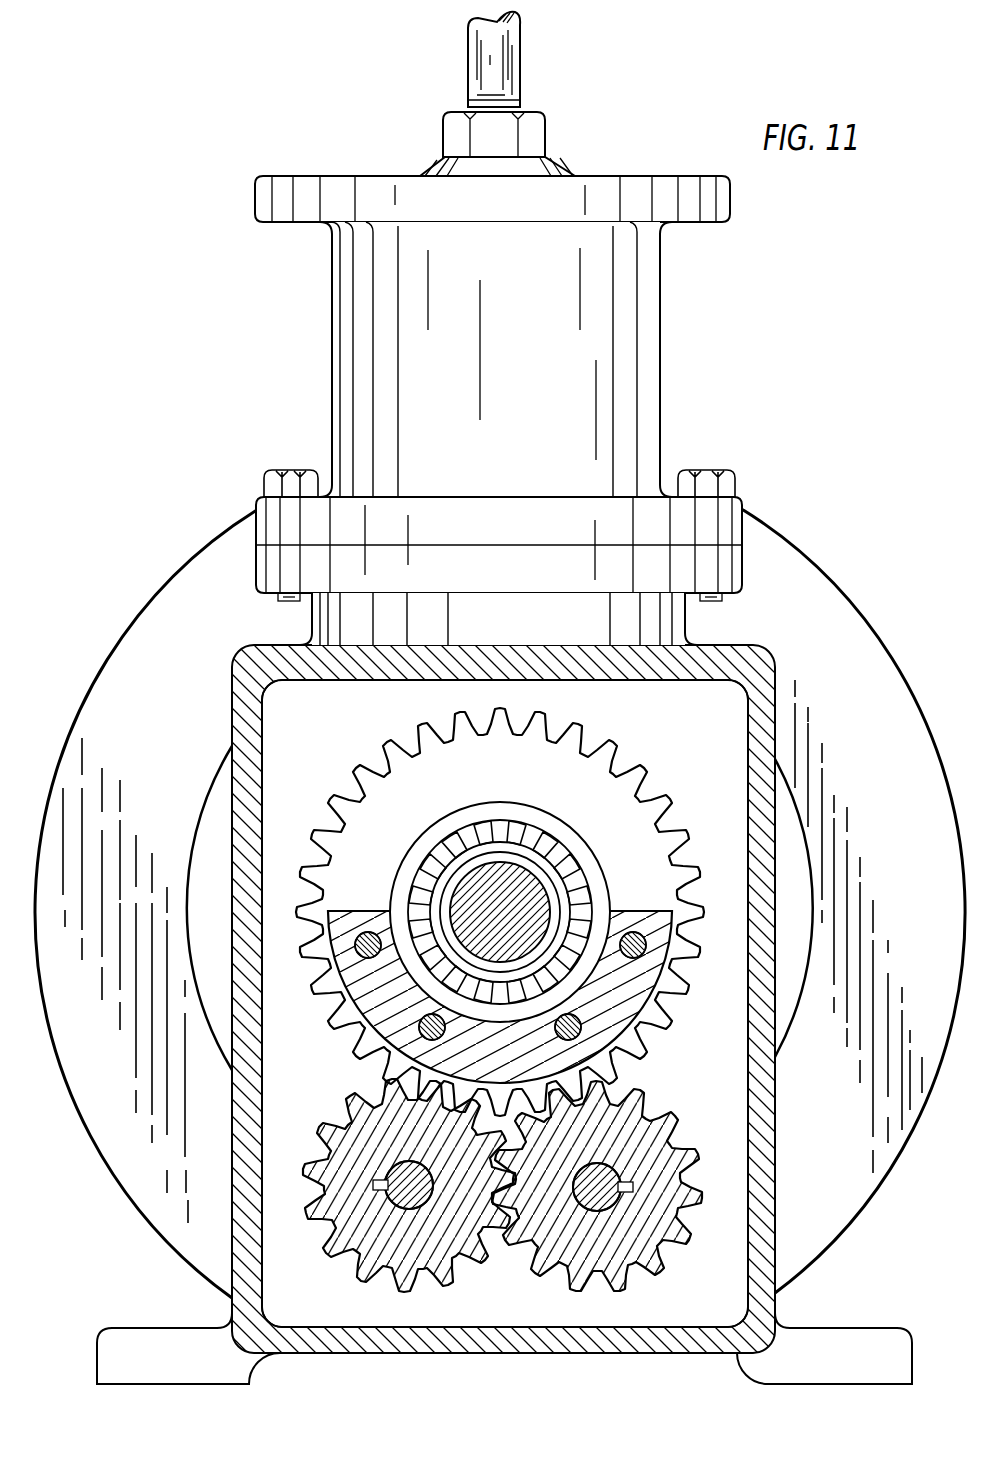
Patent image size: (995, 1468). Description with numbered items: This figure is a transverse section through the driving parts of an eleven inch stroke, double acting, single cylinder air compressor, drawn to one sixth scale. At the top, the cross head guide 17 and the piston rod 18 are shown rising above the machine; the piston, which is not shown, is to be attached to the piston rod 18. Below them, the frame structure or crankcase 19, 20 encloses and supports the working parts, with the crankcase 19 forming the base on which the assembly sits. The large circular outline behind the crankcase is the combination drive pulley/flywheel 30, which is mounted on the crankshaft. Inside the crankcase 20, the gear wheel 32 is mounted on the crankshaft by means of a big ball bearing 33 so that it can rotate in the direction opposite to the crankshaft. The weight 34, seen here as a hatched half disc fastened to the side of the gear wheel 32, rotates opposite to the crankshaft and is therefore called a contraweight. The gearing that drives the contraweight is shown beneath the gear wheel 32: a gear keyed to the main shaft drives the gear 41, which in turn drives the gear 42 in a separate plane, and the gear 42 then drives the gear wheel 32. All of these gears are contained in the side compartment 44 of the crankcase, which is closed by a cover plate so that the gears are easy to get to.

The cross head guide 17 is at (643, 308).
The piston rod 18 is at (520, 60).
The crankcase 19 is at (852, 1348).
The crankcase 20 is at (248, 793).
The drive pulley/flywheel 30 is at (790, 570).
The gear wheel 32 is at (575, 775).
The big ball bearing 33 is at (448, 835).
The contraweight 34 is at (628, 1005).
The gear 41 is at (362, 1243).
The gear 42 is at (668, 1245).
The side compartment 44 is at (505, 1003).